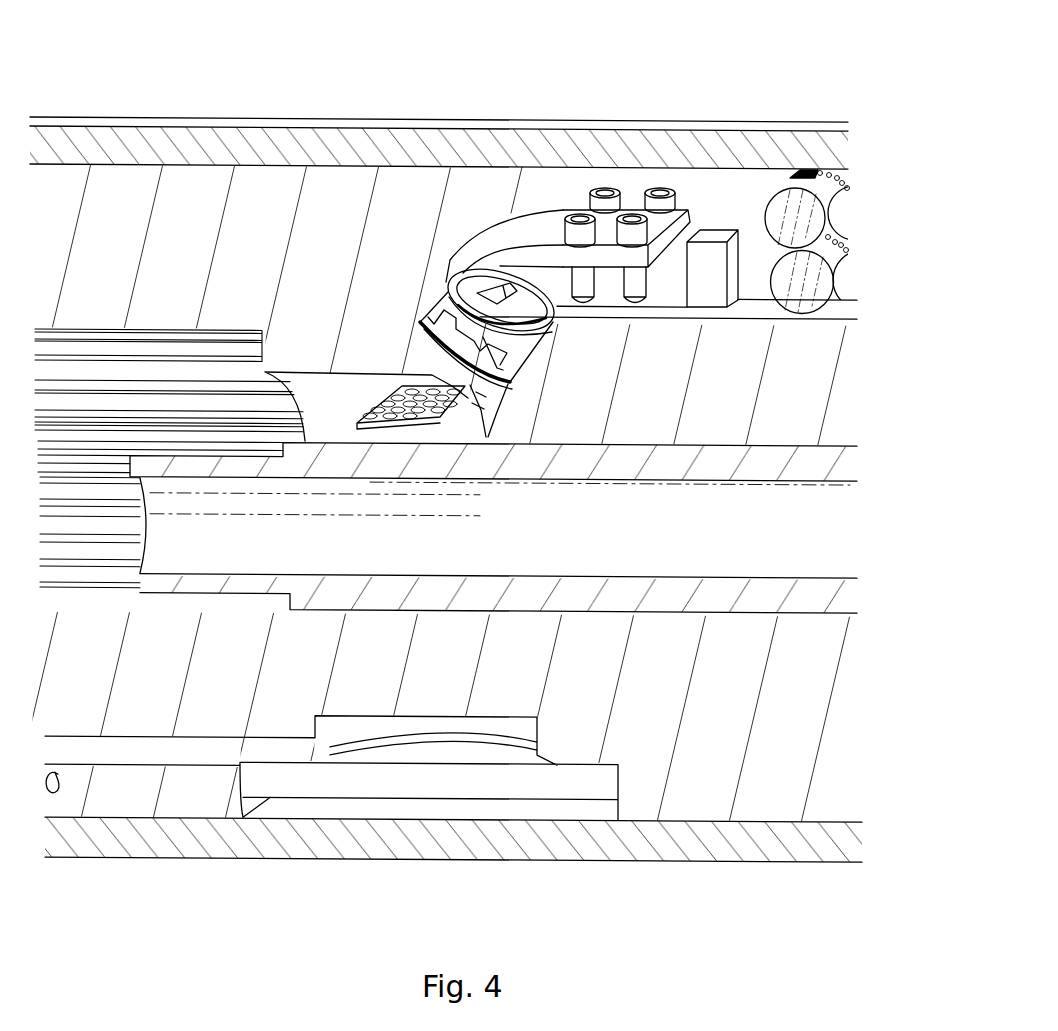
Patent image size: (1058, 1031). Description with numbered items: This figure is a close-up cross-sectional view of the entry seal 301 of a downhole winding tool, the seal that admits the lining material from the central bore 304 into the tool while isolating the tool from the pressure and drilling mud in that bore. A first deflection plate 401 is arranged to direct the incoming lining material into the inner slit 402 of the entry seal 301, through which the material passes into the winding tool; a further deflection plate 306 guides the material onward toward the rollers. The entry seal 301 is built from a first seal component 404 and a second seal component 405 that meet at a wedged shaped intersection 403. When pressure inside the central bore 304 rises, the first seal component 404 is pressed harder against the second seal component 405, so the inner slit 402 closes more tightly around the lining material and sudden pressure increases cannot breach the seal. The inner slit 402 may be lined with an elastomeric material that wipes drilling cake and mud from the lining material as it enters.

The entry seal 301 is at (430, 273).
The central bore 304 is at (147, 420).
The deflection plate 306 is at (650, 255).
The first deflection plate 401 is at (385, 393).
The inner slit 402 is at (522, 278).
The wedged shaped intersection 403 is at (510, 359).
The first seal component 404 is at (487, 397).
The second seal component 405 is at (488, 392).